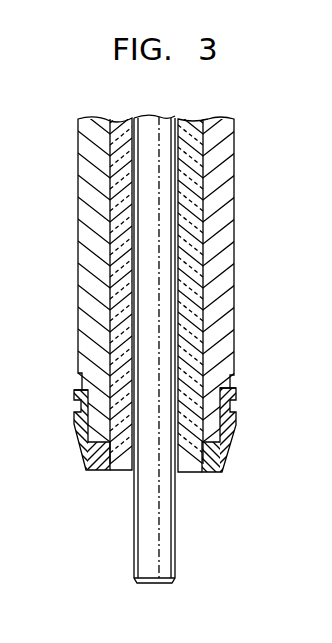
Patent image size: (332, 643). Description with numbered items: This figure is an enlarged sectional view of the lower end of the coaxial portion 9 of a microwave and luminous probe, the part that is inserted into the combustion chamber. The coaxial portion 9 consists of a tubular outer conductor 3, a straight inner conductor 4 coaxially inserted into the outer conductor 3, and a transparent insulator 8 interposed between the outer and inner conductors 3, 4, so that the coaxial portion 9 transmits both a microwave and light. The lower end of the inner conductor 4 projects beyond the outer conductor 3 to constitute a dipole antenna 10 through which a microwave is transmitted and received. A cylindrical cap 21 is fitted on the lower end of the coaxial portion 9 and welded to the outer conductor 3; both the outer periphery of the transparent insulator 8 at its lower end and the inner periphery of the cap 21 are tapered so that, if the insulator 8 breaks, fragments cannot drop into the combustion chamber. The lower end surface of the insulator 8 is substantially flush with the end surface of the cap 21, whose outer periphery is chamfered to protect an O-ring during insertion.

The outer conductor 3 is at (87, 270).
The inner conductor 4 is at (167, 322).
The transparent insulator 8 is at (198, 173).
The coaxial portion 9 is at (176, 373).
The dipole antenna 10 is at (158, 528).
The cylindrical cap 21 is at (218, 457).